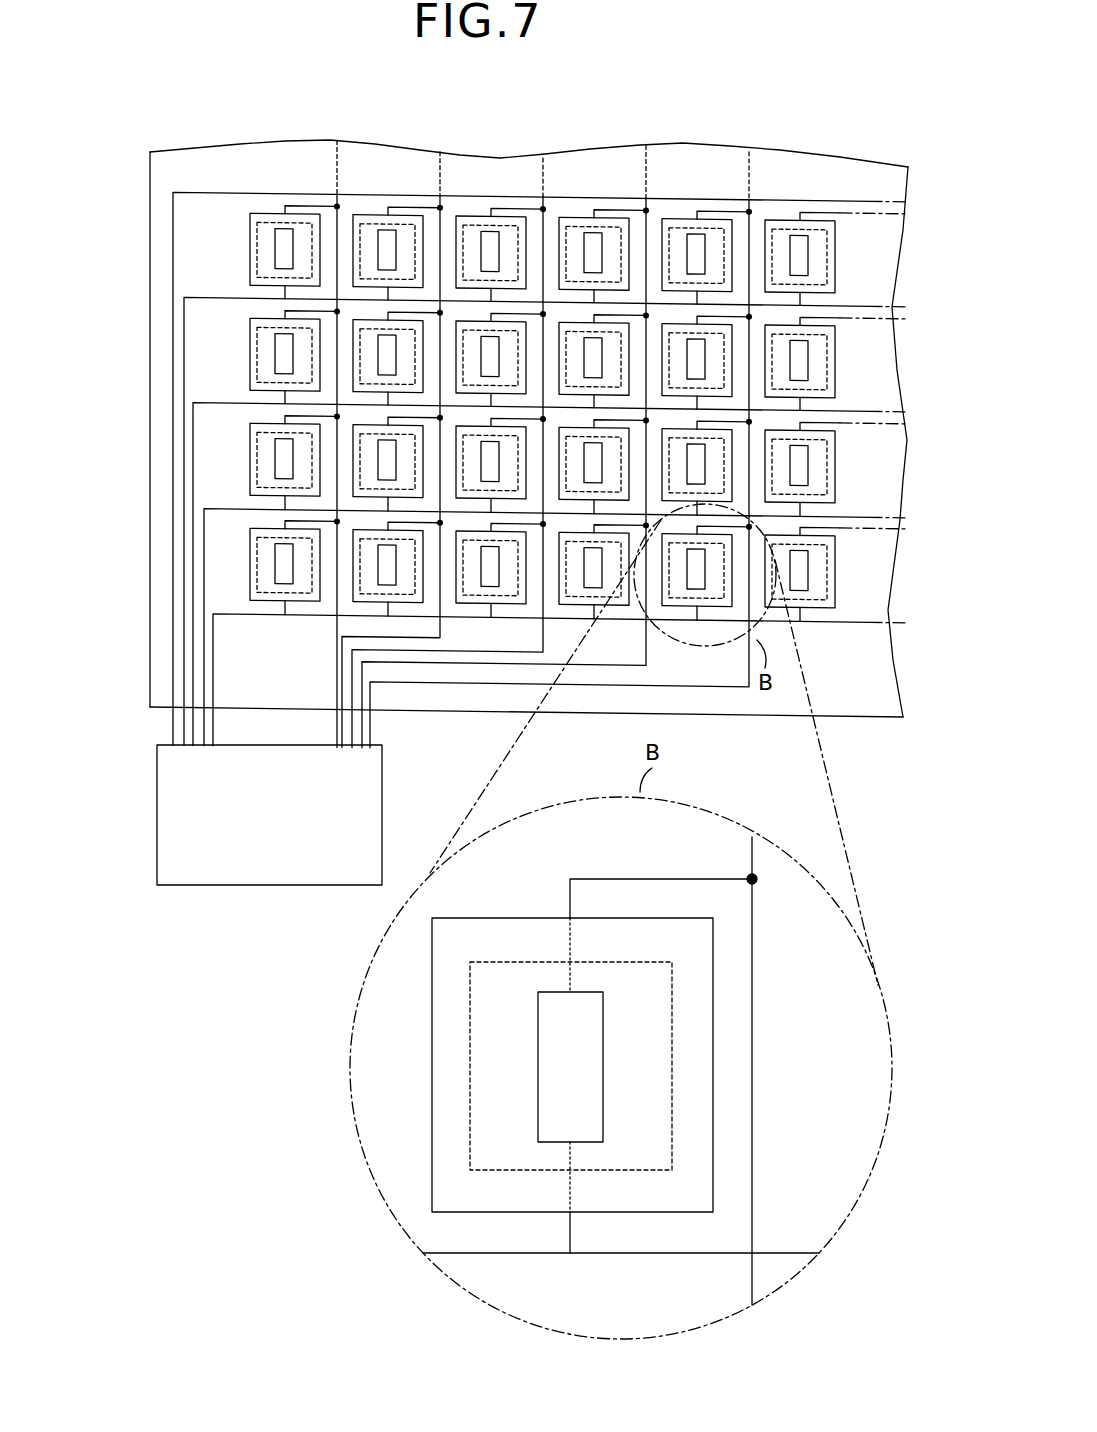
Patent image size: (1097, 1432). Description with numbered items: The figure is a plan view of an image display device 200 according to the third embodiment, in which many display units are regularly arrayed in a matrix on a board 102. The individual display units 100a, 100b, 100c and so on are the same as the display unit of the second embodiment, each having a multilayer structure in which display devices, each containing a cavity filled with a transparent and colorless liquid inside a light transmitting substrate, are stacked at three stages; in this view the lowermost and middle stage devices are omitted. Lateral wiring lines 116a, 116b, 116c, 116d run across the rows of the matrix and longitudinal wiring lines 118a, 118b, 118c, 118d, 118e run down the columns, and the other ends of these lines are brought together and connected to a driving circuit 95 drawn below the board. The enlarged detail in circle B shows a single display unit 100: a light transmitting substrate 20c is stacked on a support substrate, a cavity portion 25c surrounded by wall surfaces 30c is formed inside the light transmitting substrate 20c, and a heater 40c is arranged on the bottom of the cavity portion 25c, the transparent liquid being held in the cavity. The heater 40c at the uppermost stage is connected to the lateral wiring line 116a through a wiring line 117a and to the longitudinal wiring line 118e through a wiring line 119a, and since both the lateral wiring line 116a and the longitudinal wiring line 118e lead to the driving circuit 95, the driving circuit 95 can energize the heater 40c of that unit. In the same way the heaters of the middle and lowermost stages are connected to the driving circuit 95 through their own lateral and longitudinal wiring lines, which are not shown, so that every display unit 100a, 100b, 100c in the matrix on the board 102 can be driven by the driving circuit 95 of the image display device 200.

The board 102 is at (150, 227).
The lateral wiring line 116a is at (213, 648).
The lateral wiring line 116b is at (204, 568).
The lateral wiring line 116c is at (193, 451).
The lateral wiring line 116d is at (184, 352).
The longitudinal wiring line 118a is at (335, 688).
The longitudinal wiring line 118b is at (385, 650).
The longitudinal wiring line 118c is at (463, 652).
The longitudinal wiring line 118d is at (570, 668).
The longitudinal wiring line 118e is at (718, 690).
The display unit 100a is at (258, 613).
The display unit 100b is at (400, 612).
The display unit 100c is at (510, 614).
The display unit 100 is at (649, 1016).
The driving circuit 95 is at (208, 885).
The image display device 200 is at (305, 960).
The light transmitting substrate 20c is at (720, 1130).
The cavity portion 25c is at (660, 1063).
The wall surface 30c is at (548, 960).
The heater 40c is at (575, 1003).
The wiring line 117a is at (572, 1232).
The wiring line 119a is at (716, 879).